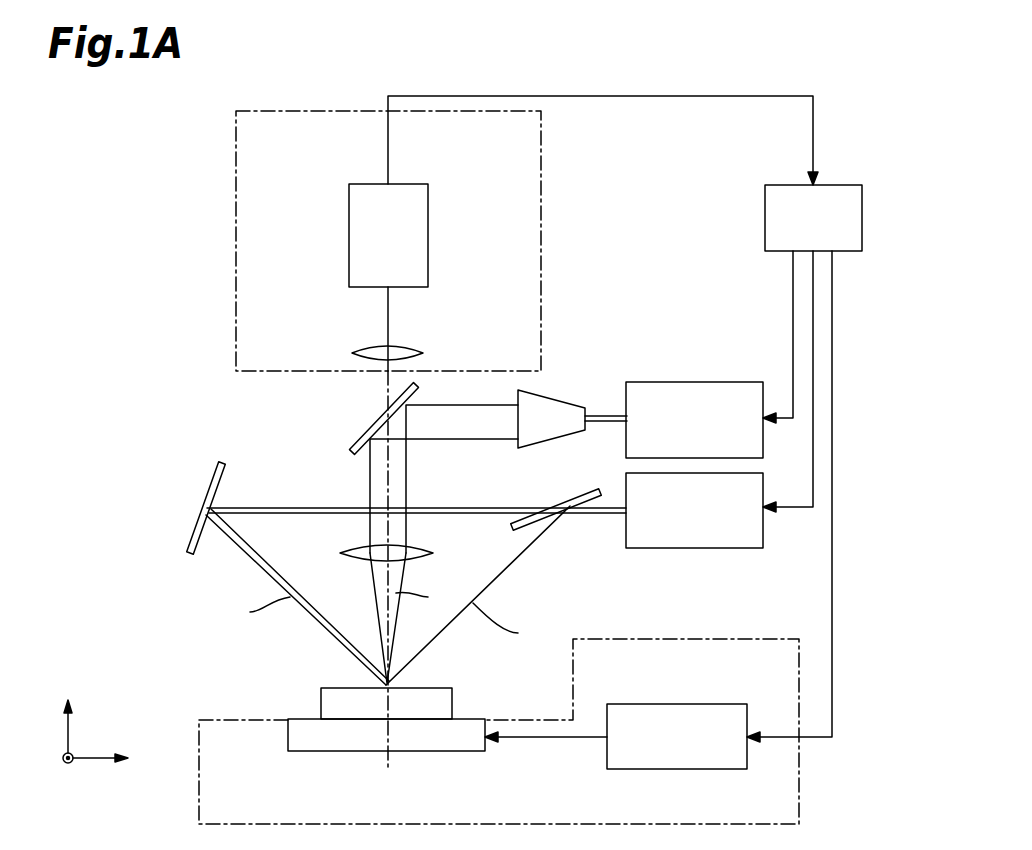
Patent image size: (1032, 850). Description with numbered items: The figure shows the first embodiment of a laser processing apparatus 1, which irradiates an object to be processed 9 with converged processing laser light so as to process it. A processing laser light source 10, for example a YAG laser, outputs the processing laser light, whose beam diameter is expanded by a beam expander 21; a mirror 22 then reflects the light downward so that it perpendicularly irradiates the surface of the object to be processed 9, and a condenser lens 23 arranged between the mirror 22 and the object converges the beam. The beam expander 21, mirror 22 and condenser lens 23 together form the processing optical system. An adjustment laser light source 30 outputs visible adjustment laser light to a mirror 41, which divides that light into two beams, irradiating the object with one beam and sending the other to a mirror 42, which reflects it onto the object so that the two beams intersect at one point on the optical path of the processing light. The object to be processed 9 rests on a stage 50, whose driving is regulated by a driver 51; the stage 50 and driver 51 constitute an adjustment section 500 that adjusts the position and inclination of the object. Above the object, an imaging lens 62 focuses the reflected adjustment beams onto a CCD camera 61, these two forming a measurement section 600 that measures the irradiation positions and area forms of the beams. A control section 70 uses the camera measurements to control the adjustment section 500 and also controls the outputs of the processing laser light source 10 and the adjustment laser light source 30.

The laser processing apparatus 1 is at (137, 182).
The object to be processed 9 is at (321, 700).
The processing laser light source 10 is at (733, 382).
The beam expander 21 is at (562, 400).
The mirror 22 is at (358, 440).
The condenser lens 23 is at (350, 550).
The adjustment laser light source 30 is at (733, 548).
The mirror 41 is at (577, 490).
The mirror 42 is at (210, 490).
The stage 50 is at (288, 735).
The driver 51 is at (727, 703).
The CCD camera 61 is at (349, 243).
The imaging lens 62 is at (367, 347).
The control section 70 is at (835, 184).
The adjustment section 500 is at (799, 783).
The measurement section 600 is at (541, 285).